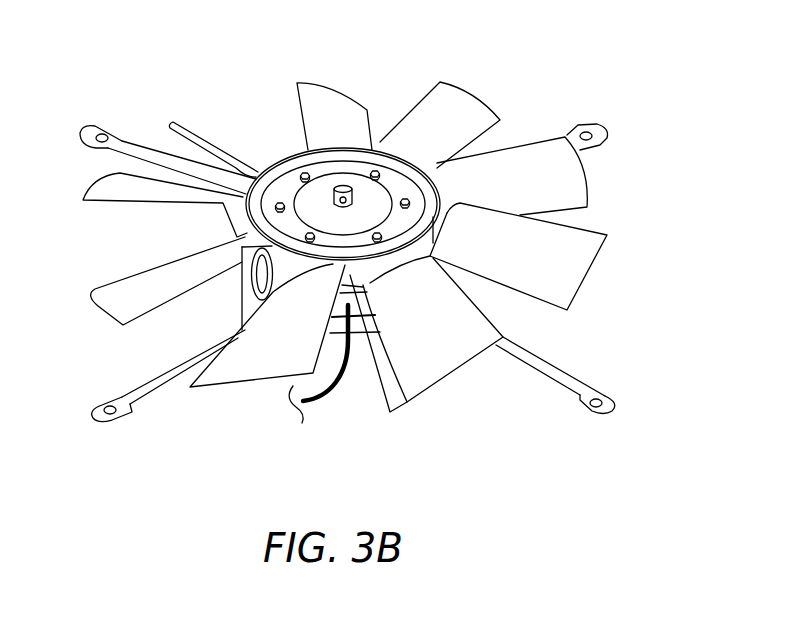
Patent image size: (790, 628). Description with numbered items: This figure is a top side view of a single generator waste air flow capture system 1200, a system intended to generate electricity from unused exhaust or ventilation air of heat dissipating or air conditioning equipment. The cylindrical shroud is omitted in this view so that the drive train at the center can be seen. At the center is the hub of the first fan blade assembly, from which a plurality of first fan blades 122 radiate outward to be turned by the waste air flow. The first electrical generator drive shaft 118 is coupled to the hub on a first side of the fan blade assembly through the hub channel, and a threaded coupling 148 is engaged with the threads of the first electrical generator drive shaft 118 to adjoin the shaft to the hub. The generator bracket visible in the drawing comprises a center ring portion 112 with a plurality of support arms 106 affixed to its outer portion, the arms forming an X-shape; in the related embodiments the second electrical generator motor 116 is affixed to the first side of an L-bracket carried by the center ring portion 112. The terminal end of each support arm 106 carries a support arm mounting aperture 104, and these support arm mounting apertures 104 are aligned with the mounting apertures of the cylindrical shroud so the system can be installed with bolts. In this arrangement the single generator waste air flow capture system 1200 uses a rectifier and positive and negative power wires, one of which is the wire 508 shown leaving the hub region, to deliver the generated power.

The single generator waste air flow capture system 1200 is at (522, 70).
The support arm mounting aperture 104 is at (115, 413).
The support arm 106 is at (172, 380).
The center ring portion 112 is at (262, 290).
The second electrical generator motor 116 is at (390, 412).
The first electrical generator drive shaft 118 is at (343, 187).
The first fan blade 122 is at (438, 370).
The threaded coupling 148 is at (333, 196).
The cable 508 is at (313, 405).